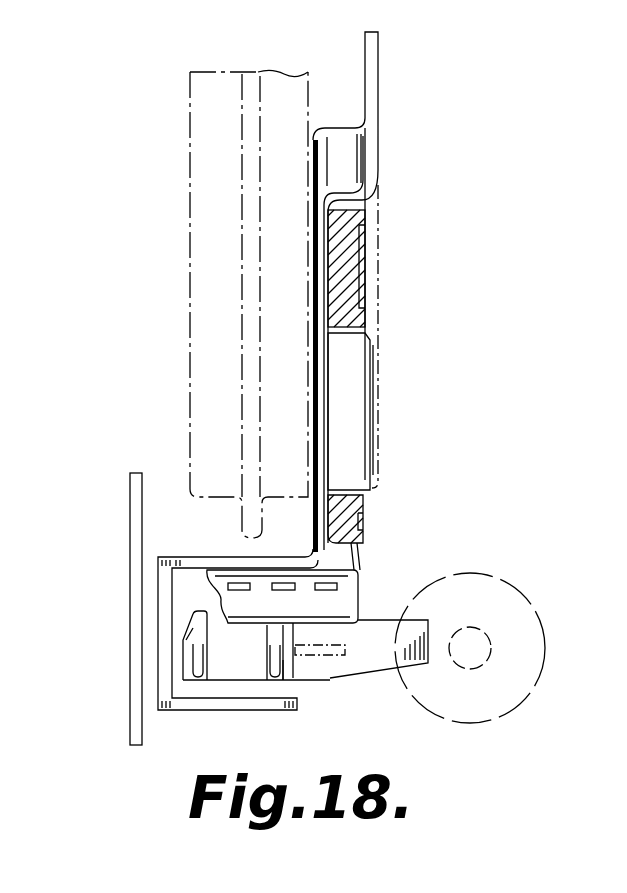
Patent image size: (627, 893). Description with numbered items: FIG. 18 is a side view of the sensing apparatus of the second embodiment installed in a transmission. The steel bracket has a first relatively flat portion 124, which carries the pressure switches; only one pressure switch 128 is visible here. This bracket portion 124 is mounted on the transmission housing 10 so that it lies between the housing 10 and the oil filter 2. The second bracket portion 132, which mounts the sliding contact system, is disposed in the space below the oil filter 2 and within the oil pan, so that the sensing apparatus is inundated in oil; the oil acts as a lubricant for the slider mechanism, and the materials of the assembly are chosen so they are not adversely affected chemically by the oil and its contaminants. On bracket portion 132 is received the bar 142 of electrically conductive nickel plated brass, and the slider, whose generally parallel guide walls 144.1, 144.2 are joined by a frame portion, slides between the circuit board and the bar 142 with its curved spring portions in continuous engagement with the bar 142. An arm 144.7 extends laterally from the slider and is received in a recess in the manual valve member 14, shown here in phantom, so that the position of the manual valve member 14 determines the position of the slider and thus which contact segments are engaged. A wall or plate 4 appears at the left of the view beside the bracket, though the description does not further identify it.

The oil filter 2 is at (197, 311).
The wall plate 4 is at (137, 553).
The transmission housing 10 is at (380, 283).
The manual valve member 14 is at (531, 694).
The first relatively flat portion 124 is at (322, 311).
The pressure switch 128 is at (373, 384).
The second portion of bracket 132 is at (278, 711).
The bar 142 is at (255, 667).
The guide wall 144.1 is at (284, 681).
The guide wall 144.2 is at (190, 681).
The arm 144.7 is at (418, 662).